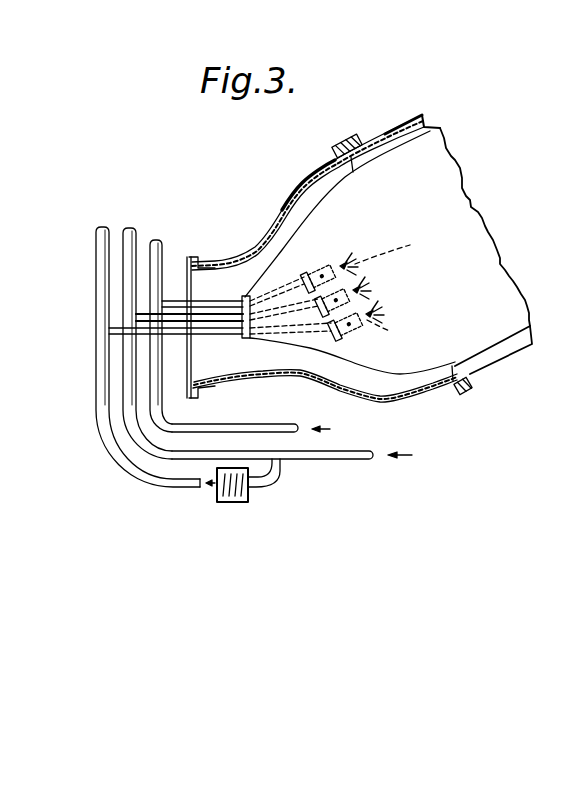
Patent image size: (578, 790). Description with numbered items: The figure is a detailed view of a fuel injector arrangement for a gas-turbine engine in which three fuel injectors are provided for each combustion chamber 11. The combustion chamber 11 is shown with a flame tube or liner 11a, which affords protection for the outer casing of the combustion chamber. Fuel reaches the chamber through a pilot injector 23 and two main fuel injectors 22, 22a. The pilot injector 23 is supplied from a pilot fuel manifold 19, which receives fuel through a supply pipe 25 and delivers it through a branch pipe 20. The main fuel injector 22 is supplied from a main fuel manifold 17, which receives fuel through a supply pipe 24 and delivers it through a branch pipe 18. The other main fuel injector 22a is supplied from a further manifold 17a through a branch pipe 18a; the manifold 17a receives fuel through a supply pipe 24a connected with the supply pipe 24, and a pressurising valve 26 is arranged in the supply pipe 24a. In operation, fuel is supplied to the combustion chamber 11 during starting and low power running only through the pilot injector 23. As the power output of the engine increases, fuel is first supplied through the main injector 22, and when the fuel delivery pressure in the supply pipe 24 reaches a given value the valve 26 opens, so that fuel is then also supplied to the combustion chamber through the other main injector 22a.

The combustion chamber 11 is at (283, 208).
The flame tube or liner 11a is at (422, 148).
The main fuel manifold 17 is at (132, 227).
The manifold 17a is at (103, 227).
The branch pipe 18 is at (203, 318).
The branch pipe 18a is at (214, 337).
The pilot fuel manifold 19 is at (160, 240).
The branch pipe 20 is at (173, 302).
The main fuel injector 22 is at (400, 258).
The main fuel injector 22a is at (402, 337).
The pilot injector 23 is at (334, 258).
The supply pipe 24 is at (355, 461).
The supply pipe 24a is at (128, 467).
The supply pipe 25 is at (258, 427).
The pressurising valve 26 is at (247, 499).